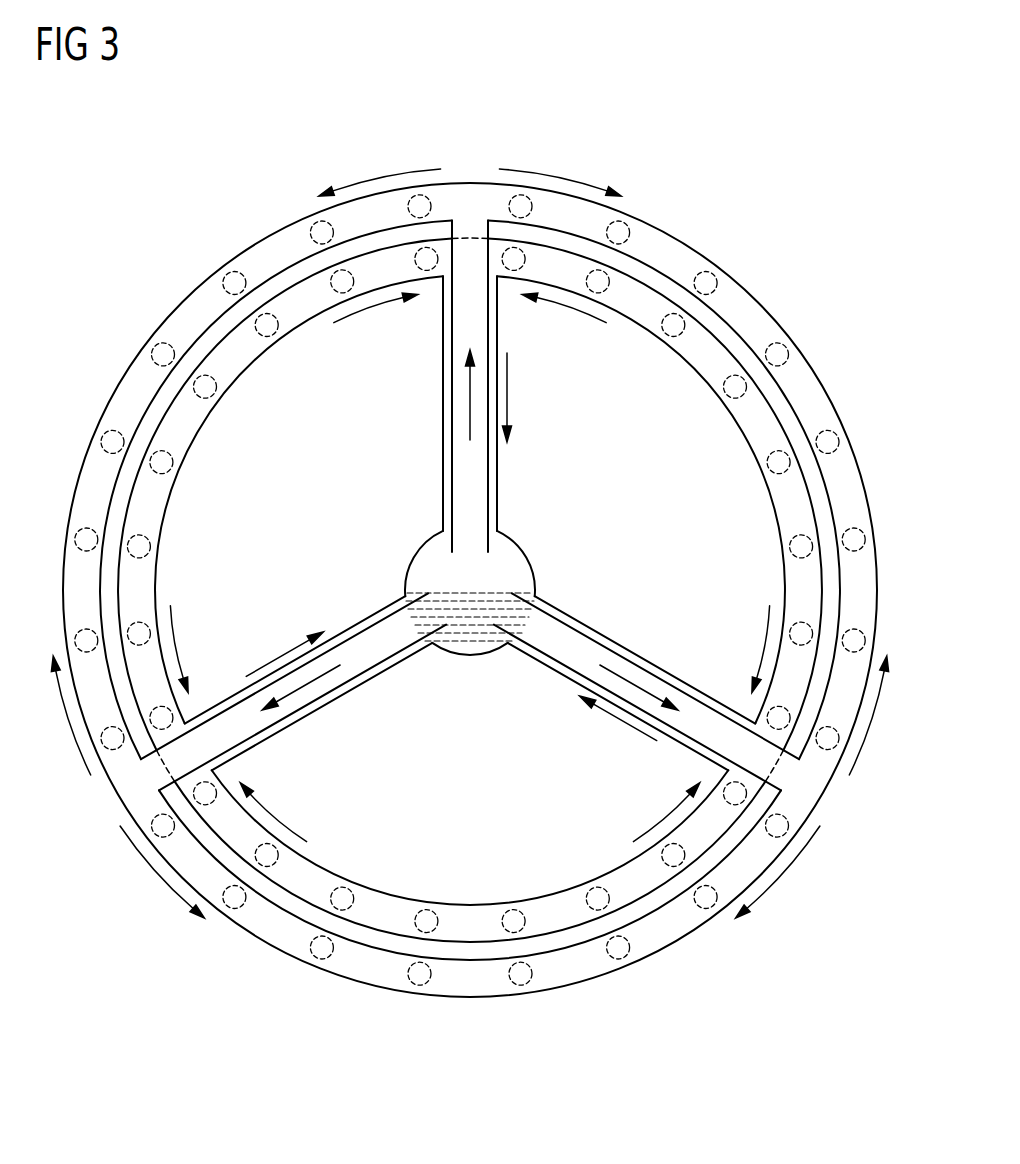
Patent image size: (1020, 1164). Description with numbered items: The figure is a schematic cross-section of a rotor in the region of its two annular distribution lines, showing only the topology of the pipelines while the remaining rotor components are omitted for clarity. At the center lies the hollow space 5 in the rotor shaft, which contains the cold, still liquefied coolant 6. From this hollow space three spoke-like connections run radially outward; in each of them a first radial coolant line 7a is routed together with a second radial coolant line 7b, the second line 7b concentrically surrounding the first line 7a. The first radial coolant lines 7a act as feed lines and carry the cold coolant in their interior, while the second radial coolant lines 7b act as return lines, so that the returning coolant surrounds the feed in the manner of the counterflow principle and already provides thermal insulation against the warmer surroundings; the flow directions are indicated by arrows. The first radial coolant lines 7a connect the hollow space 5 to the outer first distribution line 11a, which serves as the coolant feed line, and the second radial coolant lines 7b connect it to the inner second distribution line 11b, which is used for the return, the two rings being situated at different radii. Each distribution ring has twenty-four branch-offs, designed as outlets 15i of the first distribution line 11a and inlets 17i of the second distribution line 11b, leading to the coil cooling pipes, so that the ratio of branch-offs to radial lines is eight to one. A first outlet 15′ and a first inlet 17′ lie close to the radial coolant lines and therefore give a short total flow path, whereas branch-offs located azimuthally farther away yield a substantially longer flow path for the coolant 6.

The hollow space 5 is at (474, 586).
The coolant 6 is at (470, 645).
The first radial coolant line 7a is at (463, 462).
The second radial coolant line 7b is at (445, 423).
The first distribution line 11a is at (196, 303).
The second distribution line 11b is at (242, 348).
The first outlet 15′ is at (523, 205).
The outlets 15i is at (618, 228).
The first inlet 17′ is at (513, 265).
The inlets 17i is at (597, 287).